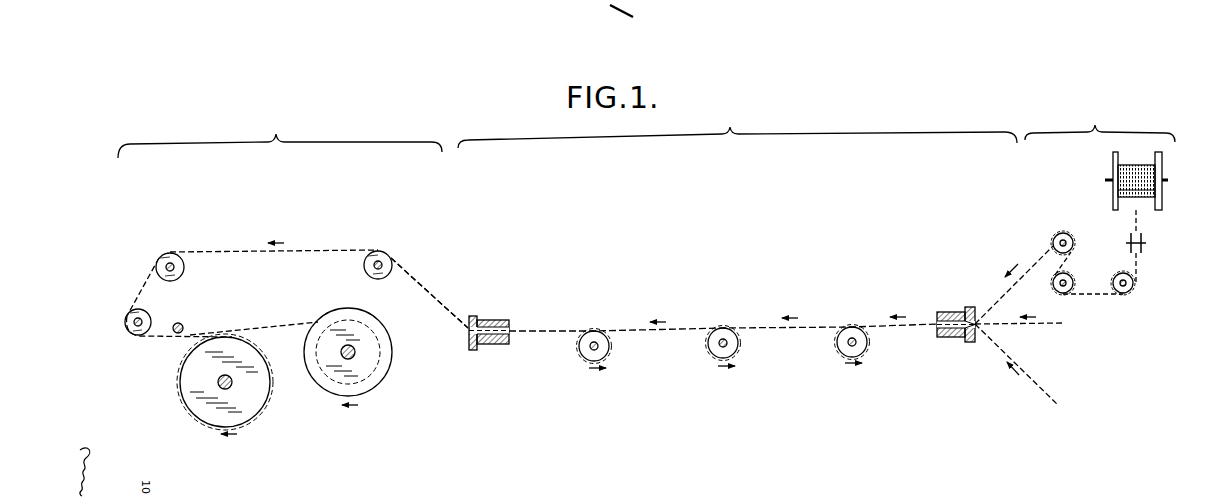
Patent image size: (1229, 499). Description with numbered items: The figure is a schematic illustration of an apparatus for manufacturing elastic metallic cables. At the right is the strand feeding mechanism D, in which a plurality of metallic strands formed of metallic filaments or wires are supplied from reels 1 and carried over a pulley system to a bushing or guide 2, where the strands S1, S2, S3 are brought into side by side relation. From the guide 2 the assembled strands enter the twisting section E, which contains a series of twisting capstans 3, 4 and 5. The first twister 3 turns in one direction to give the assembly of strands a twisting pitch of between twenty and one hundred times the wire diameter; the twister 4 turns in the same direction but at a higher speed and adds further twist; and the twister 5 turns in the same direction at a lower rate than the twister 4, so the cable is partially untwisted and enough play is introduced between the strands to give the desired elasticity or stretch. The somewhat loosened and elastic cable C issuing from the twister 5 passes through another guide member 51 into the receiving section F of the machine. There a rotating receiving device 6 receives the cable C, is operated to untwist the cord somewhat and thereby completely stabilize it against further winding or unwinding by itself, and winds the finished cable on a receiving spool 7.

The reel 1 is at (1113, 170).
The bushing or guide 2 is at (955, 312).
The twisting capstan 3 is at (850, 325).
The twisting capstan 4 is at (722, 326).
The twisting capstan 5 is at (594, 329).
The guide member 51 is at (497, 318).
The rotating receiving device 6 is at (325, 246).
The receiving spool 7 is at (382, 373).
The cable C is at (438, 294).
The strand feeding mechanism D is at (1072, 130).
The twisting section E is at (764, 133).
The receiving section F is at (276, 134).
The strand S1 is at (1037, 256).
The strand S2 is at (1056, 326).
The strand S3 is at (1040, 386).